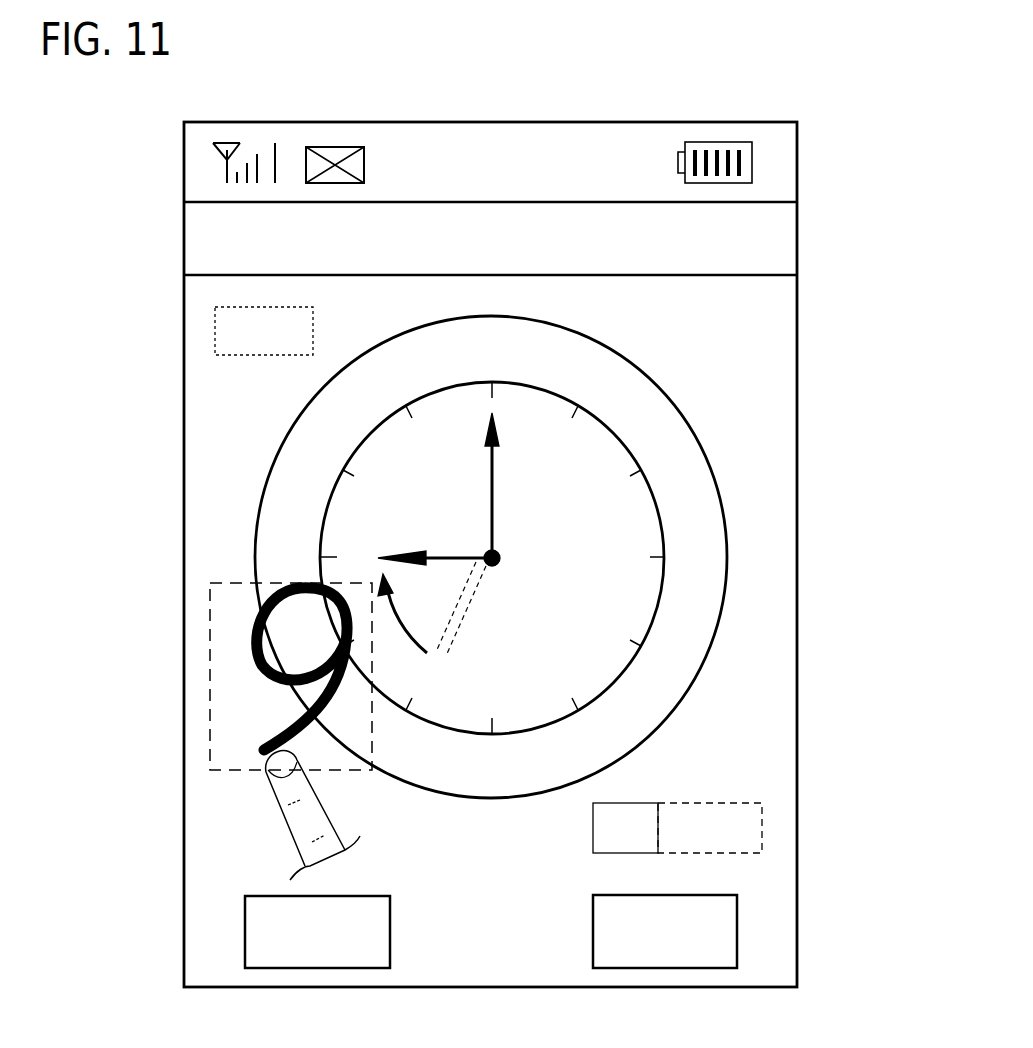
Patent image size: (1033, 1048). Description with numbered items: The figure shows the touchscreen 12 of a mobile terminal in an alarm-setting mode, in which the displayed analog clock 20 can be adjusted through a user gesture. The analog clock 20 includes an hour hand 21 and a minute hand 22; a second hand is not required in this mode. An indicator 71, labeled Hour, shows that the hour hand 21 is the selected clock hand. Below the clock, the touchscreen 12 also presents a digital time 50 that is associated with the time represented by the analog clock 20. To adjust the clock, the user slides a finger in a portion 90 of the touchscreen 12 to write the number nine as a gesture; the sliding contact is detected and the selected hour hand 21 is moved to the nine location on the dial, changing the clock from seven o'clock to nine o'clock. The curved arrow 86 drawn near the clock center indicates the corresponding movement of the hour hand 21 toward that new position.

The touchscreen 12 is at (798, 352).
The analog clock 20 is at (710, 665).
The hour hand 21 is at (435, 556).
The minute hand 22 is at (492, 490).
The digital time 50 is at (762, 828).
The indicator 71 is at (215, 328).
The rotation direction indicator 86 is at (397, 617).
The portion 90 is at (210, 672).